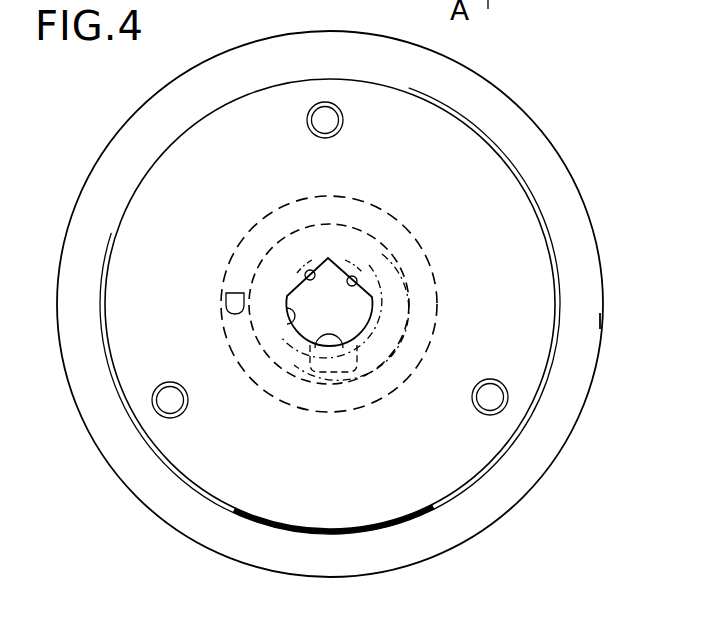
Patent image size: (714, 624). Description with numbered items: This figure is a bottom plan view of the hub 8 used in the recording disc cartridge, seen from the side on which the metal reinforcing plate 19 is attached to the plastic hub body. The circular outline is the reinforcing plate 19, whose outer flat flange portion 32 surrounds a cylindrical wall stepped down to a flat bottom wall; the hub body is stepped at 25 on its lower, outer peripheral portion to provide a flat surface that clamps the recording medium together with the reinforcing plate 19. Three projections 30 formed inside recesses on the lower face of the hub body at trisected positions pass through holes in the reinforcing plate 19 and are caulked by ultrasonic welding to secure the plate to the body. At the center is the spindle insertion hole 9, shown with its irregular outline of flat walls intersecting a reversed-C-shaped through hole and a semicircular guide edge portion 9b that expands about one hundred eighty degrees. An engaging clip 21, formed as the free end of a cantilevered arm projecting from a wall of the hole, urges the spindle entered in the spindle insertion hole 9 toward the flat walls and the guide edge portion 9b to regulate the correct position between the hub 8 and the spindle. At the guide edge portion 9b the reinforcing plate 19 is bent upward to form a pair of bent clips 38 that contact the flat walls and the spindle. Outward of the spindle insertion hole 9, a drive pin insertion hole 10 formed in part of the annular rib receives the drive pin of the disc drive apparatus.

The hub 8 is at (558, 148).
The flat flange portion 32 is at (603, 321).
The reinforcing plate 19 is at (523, 275).
The stepped portion 25 is at (480, 110).
The projections 30 is at (333, 119).
The spindle insertion hole 9 is at (345, 317).
The guide edge portion 9b is at (292, 326).
The engaging clip 21 is at (338, 331).
The bent clips 38 is at (306, 276).
The drive pin insertion hole 10 is at (234, 292).